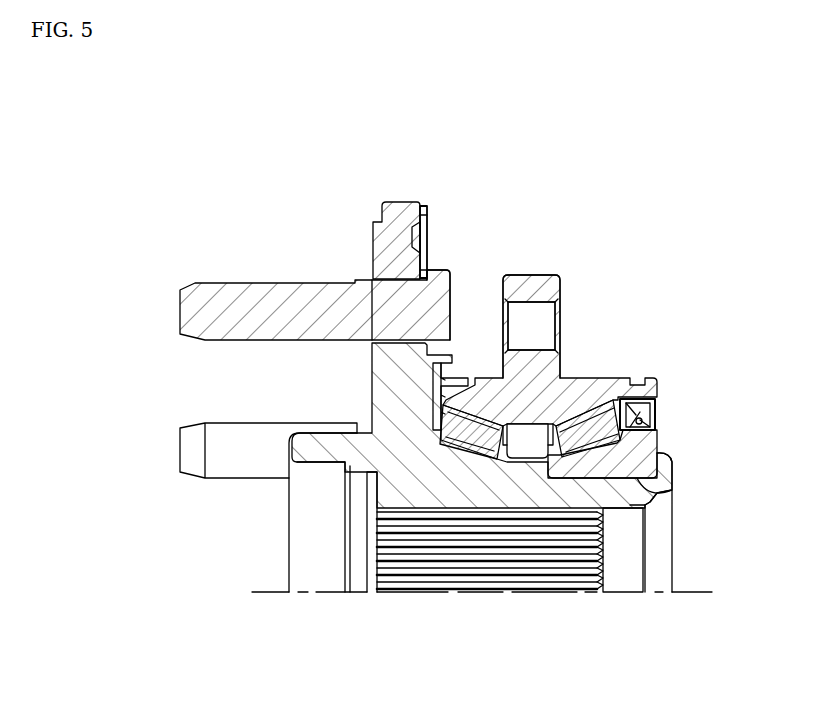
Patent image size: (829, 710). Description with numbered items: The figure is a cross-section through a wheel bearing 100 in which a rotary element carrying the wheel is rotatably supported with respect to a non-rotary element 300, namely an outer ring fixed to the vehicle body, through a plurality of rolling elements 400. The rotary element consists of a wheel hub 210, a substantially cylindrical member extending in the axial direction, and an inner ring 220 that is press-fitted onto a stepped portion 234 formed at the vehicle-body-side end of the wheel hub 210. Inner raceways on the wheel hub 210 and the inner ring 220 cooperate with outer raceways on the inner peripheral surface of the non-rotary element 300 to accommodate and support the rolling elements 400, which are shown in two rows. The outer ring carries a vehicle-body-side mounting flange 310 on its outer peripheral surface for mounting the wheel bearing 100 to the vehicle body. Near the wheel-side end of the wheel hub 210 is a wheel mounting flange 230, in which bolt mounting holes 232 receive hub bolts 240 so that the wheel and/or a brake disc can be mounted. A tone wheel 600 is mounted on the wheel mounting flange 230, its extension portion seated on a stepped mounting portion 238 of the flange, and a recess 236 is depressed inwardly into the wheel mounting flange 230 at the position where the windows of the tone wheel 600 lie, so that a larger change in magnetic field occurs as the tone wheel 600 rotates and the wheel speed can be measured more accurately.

The wheel bearing 100 is at (565, 173).
The wheel hub 210 is at (327, 458).
The inner ring 220 is at (633, 448).
The wheel mounting flange 230 is at (377, 245).
The bolt mounting holes 232 is at (376, 274).
The stepped portion 234 is at (672, 490).
The recess 236 is at (403, 232).
The stepped mounting portion 238 is at (432, 356).
The hub bolts 240 is at (226, 298).
The non-rotary element 300 is at (580, 392).
The vehicle-body-side mounting flange 310 is at (546, 283).
The rolling elements 400 is at (588, 440).
The tone wheel 600 is at (423, 208).